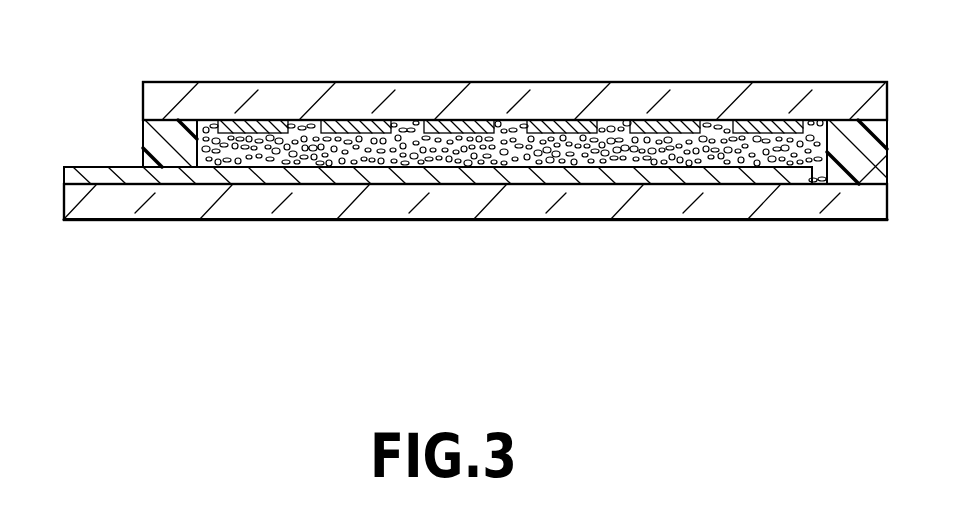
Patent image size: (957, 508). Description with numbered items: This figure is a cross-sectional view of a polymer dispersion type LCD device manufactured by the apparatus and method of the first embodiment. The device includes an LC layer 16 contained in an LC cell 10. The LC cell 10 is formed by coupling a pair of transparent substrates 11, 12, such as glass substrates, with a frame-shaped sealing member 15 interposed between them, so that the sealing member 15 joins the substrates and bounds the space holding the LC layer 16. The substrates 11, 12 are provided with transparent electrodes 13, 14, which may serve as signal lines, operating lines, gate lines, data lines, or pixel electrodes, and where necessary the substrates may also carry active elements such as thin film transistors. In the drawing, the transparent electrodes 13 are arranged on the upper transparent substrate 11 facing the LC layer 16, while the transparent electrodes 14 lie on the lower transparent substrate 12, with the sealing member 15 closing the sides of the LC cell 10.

The LC cell 10 is at (826, 74).
The transparent substrate 11 is at (205, 95).
The transparent substrate 12 is at (225, 208).
The transparent electrodes 13 is at (350, 118).
The transparent electrodes 14 is at (462, 180).
The sealing member 15 is at (150, 135).
The LC layer 16 is at (614, 160).